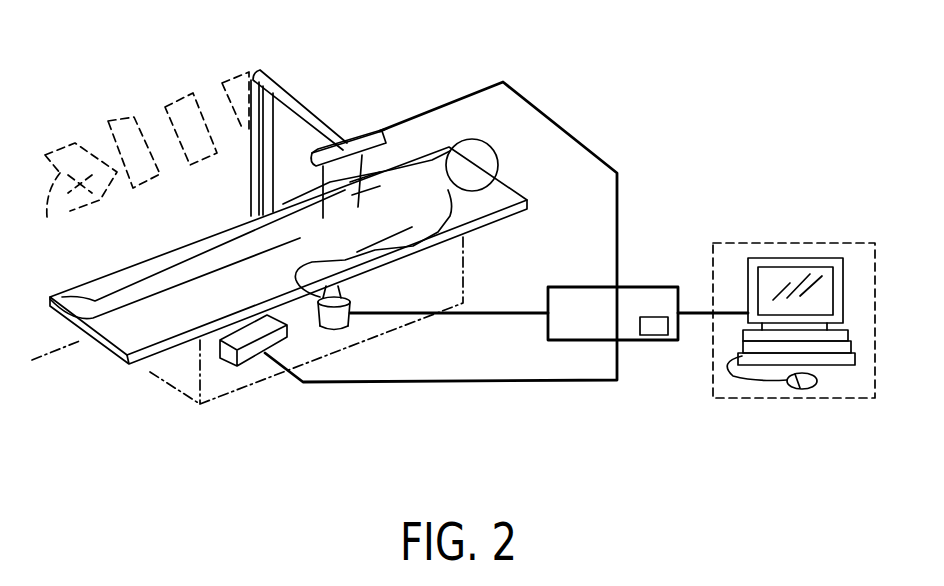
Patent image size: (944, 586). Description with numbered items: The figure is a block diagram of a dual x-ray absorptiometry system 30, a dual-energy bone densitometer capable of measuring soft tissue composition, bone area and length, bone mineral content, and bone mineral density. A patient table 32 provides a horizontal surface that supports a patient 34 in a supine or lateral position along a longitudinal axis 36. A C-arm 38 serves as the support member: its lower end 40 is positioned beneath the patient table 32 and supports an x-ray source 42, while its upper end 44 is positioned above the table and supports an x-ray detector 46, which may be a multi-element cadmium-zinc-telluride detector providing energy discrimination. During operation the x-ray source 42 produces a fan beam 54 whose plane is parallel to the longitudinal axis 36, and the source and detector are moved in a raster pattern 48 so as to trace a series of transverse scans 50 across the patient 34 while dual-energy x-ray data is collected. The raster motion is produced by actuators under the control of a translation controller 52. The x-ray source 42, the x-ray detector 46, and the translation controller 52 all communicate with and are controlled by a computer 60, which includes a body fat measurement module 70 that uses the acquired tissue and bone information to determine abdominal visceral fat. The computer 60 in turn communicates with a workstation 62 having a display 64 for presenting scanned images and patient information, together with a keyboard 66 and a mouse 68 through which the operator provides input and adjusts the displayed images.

The dual x-ray absorptiometry system 30 is at (579, 68).
The patient table 32 is at (160, 358).
The patient 34 is at (132, 287).
The longitudinal axis 36 is at (53, 350).
The C-arm 38 is at (280, 80).
The lower end 40 is at (316, 310).
The x-ray source 42 is at (340, 323).
The upper end 44 is at (303, 100).
The x-ray detector 46 is at (358, 133).
The raster pattern 48 is at (98, 114).
The transverse scans 50 is at (75, 200).
The translation controller 52 is at (247, 357).
The fan beam 54 is at (392, 147).
The computer 60 is at (606, 327).
The workstation 62 is at (790, 240).
The display 64 is at (818, 267).
The keyboard 66 is at (773, 355).
The mouse 68 is at (813, 386).
The body fat measurement module 70 is at (654, 336).